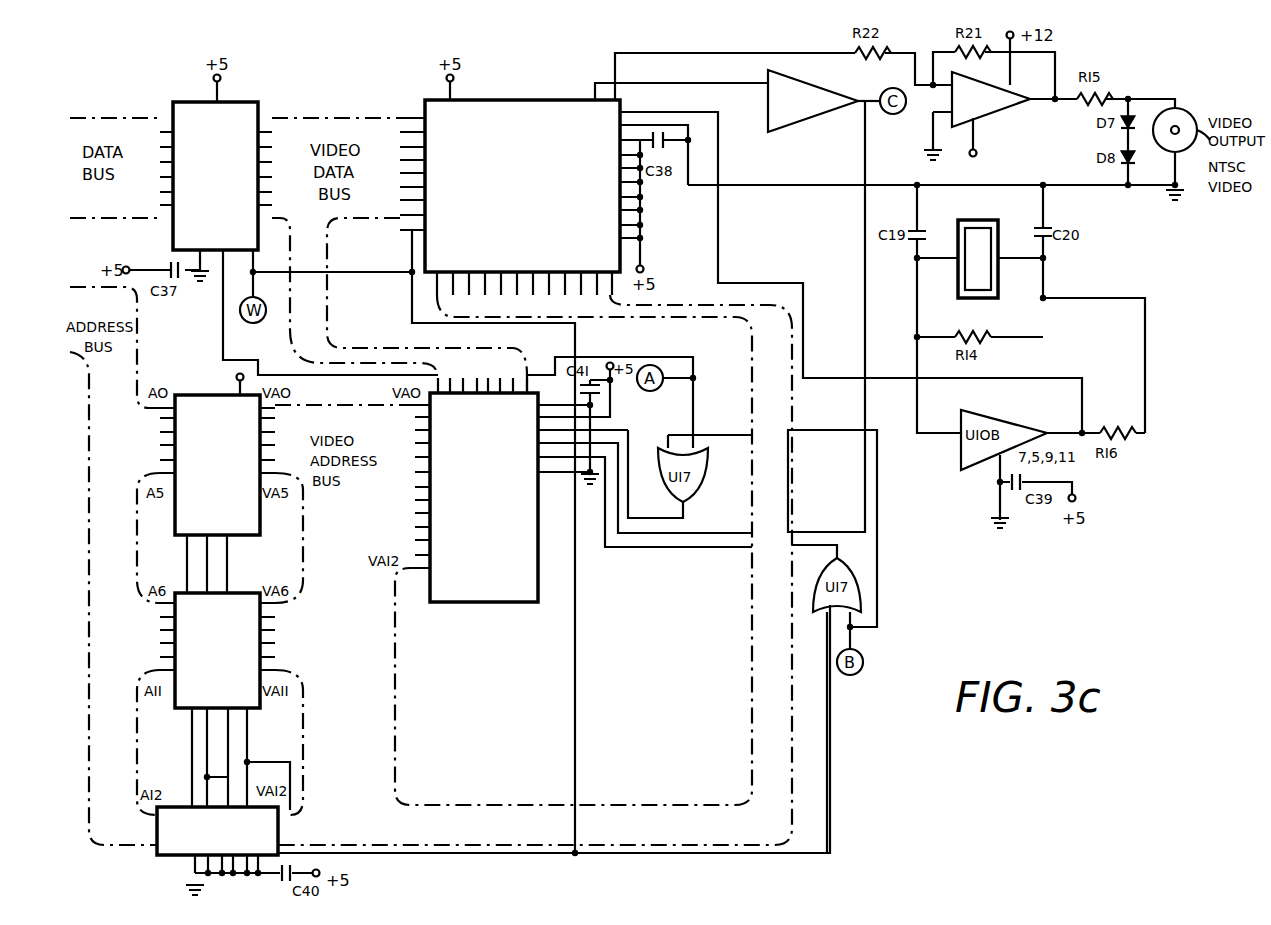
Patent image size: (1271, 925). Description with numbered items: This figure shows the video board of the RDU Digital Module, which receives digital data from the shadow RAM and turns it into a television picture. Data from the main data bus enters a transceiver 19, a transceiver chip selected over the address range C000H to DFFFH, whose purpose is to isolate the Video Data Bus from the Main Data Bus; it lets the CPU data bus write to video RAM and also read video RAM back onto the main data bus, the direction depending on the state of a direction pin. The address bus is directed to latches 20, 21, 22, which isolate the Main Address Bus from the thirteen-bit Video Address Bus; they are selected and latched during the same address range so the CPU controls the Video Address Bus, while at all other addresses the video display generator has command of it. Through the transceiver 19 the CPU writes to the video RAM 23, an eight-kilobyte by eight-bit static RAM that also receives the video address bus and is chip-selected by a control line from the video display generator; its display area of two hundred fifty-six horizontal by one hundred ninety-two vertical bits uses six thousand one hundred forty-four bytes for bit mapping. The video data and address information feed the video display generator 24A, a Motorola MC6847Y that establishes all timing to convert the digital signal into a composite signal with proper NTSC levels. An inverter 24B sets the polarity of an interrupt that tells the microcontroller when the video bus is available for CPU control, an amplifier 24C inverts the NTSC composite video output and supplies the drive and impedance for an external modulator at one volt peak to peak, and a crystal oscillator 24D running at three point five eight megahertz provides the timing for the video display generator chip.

The transceiver 19 is at (215, 211).
The latch 20 is at (217, 499).
The latch 21 is at (219, 689).
The latch 22 is at (265, 845).
The video RAM 23 is at (503, 423).
The video display generator 24A is at (535, 220).
The inverter 24B is at (832, 126).
The amplifier 24C is at (996, 122).
The Xtal oscillator 24D is at (970, 220).